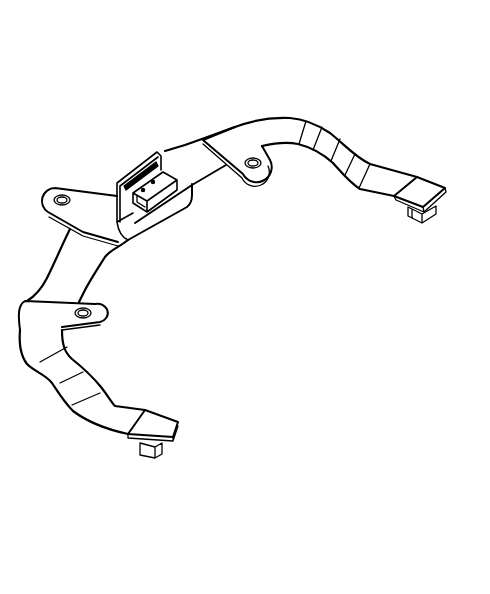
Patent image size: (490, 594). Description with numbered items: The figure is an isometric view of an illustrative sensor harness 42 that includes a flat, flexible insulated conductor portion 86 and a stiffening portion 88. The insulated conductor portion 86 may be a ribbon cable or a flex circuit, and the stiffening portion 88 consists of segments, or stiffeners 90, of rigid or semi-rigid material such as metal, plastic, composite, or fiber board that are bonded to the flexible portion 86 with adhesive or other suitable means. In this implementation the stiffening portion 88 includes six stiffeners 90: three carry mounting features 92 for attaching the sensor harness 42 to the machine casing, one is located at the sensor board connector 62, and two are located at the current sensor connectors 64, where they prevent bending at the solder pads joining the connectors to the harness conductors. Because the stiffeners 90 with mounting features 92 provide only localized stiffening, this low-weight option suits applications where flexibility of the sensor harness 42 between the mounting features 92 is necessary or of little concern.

The sensor harness 42 is at (128, 93).
The insulated conductor portion 86 is at (290, 125).
The stiffening portion 88 is at (87, 190).
The stiffener 90 is at (153, 147).
The mounting feature 92 is at (258, 157).
The sensor board connector 62 is at (175, 193).
The current sensor connector 64 is at (408, 214).